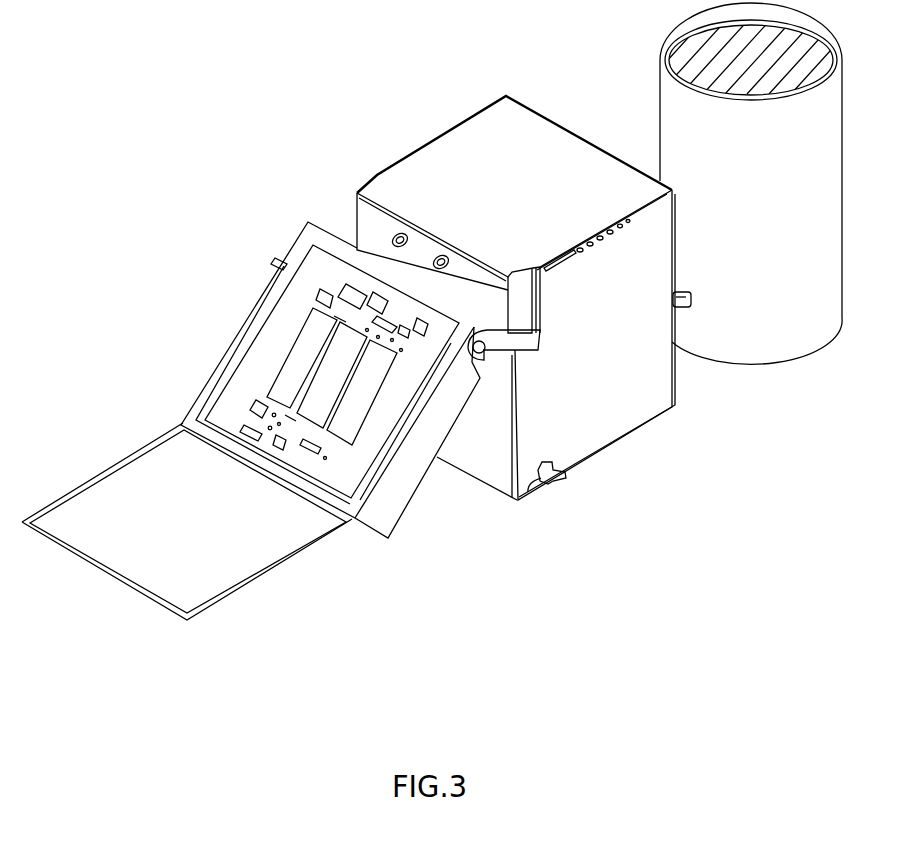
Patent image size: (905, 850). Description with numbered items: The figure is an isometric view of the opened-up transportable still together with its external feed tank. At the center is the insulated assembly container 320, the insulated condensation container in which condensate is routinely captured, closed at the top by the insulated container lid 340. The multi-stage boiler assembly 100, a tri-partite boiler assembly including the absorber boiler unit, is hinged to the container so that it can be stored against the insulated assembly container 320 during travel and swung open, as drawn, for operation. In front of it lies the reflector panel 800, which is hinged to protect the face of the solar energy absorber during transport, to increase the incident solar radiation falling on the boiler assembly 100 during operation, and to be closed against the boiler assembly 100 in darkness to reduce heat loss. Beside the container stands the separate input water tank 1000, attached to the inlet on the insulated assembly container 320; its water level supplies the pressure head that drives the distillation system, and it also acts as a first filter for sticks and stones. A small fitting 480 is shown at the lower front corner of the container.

The multi-stage boiler assembly 100 is at (243, 317).
The insulated assembly container 320 is at (608, 433).
The insulated container lid 340 is at (423, 163).
The latch 480 is at (533, 487).
The reflector panel 800 is at (237, 557).
The input water tank 1000 is at (777, 340).